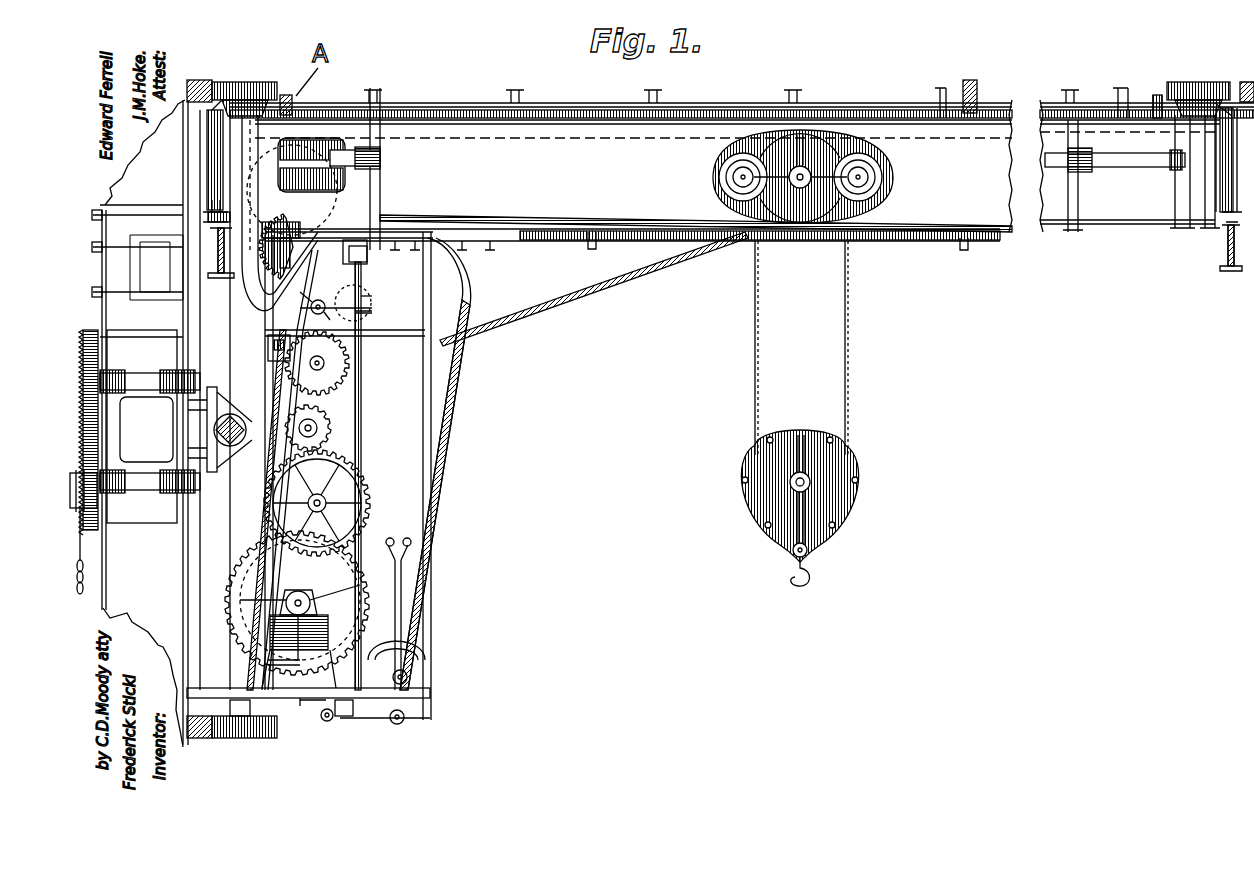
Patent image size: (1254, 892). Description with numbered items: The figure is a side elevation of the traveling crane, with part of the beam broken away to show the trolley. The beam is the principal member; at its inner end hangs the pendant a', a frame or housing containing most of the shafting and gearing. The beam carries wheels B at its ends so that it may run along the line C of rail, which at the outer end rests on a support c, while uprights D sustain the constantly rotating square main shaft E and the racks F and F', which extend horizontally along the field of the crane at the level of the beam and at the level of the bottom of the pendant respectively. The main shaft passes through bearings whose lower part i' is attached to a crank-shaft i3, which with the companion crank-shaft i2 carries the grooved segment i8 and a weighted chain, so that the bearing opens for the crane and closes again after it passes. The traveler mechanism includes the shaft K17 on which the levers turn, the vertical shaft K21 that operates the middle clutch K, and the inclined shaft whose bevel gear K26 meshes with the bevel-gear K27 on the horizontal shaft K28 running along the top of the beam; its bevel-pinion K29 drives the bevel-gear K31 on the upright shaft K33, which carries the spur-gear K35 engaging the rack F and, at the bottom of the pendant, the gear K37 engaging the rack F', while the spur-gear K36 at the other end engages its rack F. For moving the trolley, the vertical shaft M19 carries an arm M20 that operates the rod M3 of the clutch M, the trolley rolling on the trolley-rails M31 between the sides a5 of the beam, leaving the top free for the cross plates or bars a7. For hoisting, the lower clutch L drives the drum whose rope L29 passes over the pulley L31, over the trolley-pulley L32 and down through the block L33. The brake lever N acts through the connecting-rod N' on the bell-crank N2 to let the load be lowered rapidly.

The sides of the beam a5 is at (530, 175).
The cross plates or bars a7 is at (757, 95).
The pendant a' is at (355, 402).
The horizontal shaft K28 is at (878, 86).
The bevel-gear K27 is at (976, 88).
The trolley-pulley L32 is at (875, 150).
The trolley-rails M31 is at (862, 212).
The block L33 is at (838, 500).
The bevel gear K26 is at (594, 289).
The spur-gear K36 is at (1198, 90).
The spur-gear K35 is at (244, 90).
The gear K37 is at (244, 738).
The bevel-pinion K29 is at (292, 100).
The bevel-gear K31 is at (222, 100).
The upright shaft K33 is at (268, 350).
The pulley L31 is at (318, 142).
The rope L29 is at (258, 512).
The wheels B is at (217, 140).
The rack F is at (720, 83).
The rack F' is at (199, 738).
The line of rail C is at (720, 215).
The support c is at (721, 251).
The uprights D is at (144, 423).
The main shaft E is at (228, 470).
The lower part of the bearing i' is at (83, 432).
The crank-shaft i2 is at (150, 373).
The crank-shaft i3 is at (150, 473).
The grooved segment i8 is at (78, 535).
The lower clutch L is at (345, 412).
The rod M3 is at (294, 267).
The vertical shaft M19 is at (355, 262).
The clutch M is at (374, 295).
The arm M20 is at (378, 312).
The lever N is at (396, 614).
The connecting-rod N' is at (355, 712).
The bell-crank N2 is at (313, 718).
The shaft K17 is at (406, 672).
The vertical shaft K21 is at (286, 669).